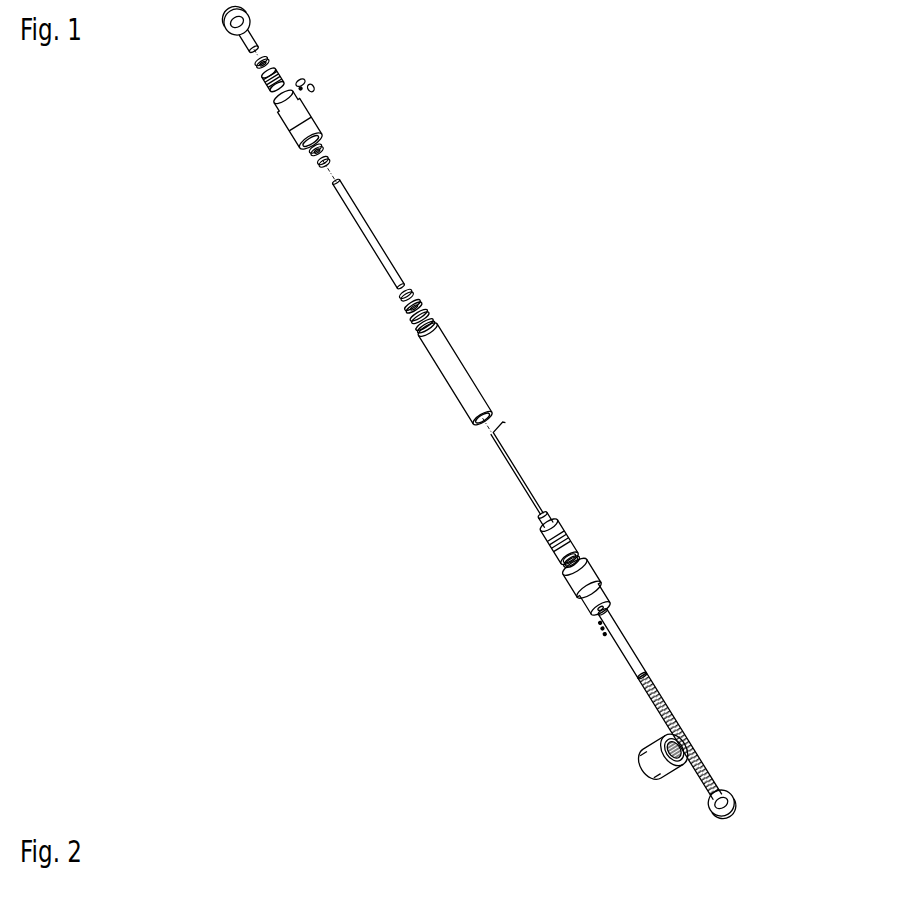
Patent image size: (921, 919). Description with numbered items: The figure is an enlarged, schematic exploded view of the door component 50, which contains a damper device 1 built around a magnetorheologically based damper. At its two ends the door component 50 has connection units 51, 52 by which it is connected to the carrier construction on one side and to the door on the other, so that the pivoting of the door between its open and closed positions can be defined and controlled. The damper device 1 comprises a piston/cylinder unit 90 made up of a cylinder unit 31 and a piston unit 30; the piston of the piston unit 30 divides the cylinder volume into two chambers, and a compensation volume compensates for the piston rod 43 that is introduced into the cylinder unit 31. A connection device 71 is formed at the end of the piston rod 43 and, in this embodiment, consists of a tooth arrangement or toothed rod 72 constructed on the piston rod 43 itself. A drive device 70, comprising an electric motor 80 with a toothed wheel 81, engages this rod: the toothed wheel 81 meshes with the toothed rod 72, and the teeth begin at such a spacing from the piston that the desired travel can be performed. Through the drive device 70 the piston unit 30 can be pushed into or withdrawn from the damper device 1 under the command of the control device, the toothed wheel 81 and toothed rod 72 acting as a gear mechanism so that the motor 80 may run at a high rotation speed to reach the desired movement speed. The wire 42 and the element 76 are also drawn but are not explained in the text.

The damper device 1 is at (418, 372).
The piston unit 30 is at (603, 550).
The cylinder unit 31 is at (443, 350).
The connecting wire 42 is at (508, 418).
The piston rod 43 is at (627, 630).
The door component 50 is at (592, 187).
The connection unit 51 is at (228, 18).
The connection unit 52 is at (727, 794).
The drive device 70 is at (572, 782).
The connection device 71 is at (647, 675).
The toothed rod 72 is at (638, 672).
The cap end face 76 is at (675, 786).
The electric motor 80 is at (647, 771).
The toothed wheel 81 is at (680, 740).
The piston/cylinder unit 90 is at (520, 522).